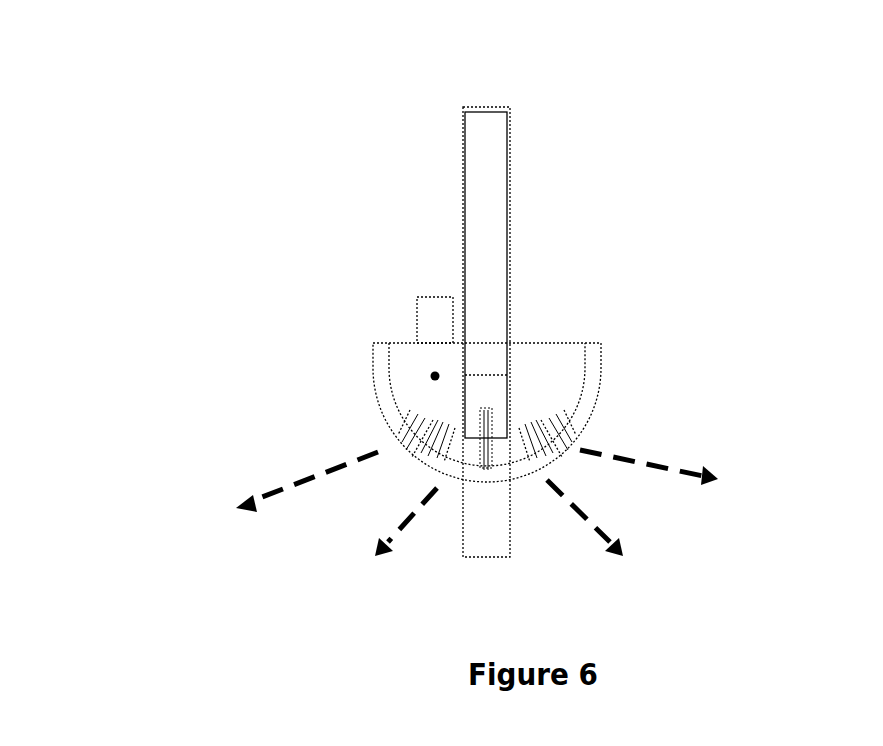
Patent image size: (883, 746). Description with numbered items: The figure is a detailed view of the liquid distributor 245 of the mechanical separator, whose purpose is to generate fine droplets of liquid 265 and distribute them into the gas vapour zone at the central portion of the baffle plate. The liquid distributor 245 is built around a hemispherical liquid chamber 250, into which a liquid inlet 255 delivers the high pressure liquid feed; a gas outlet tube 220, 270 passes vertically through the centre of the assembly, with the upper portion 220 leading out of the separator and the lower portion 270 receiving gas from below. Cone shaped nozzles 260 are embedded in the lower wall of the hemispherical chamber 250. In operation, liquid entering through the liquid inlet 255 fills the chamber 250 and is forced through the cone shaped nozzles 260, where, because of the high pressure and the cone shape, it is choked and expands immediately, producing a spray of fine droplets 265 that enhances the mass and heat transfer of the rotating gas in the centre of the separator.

The gas outlet tube 220 is at (604, 241).
The liquid distributor 245 is at (604, 361).
The hemispherical liquid chamber 250 is at (432, 375).
The liquid inlet 255 is at (320, 293).
The cone shaped nozzles 260 is at (580, 424).
The fine droplets of liquid 265 is at (477, 509).
The gas outlet tube 270 is at (632, 360).